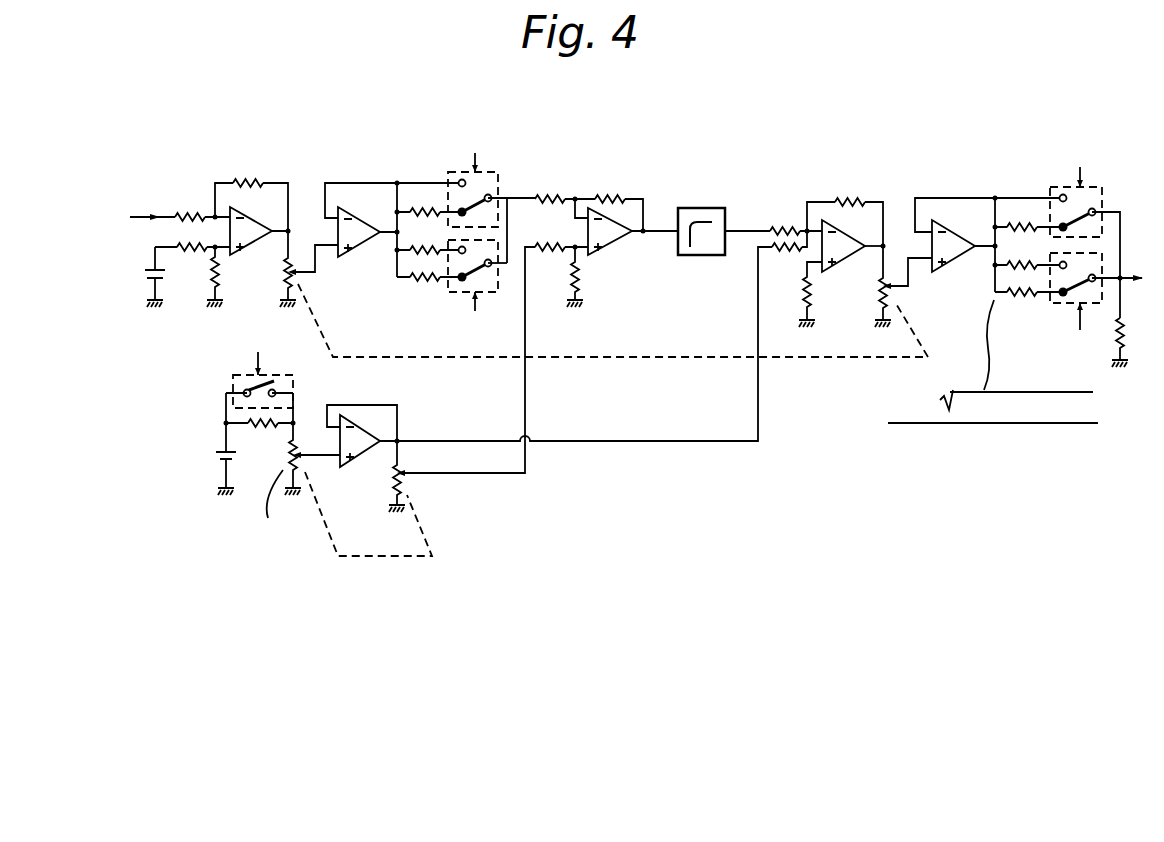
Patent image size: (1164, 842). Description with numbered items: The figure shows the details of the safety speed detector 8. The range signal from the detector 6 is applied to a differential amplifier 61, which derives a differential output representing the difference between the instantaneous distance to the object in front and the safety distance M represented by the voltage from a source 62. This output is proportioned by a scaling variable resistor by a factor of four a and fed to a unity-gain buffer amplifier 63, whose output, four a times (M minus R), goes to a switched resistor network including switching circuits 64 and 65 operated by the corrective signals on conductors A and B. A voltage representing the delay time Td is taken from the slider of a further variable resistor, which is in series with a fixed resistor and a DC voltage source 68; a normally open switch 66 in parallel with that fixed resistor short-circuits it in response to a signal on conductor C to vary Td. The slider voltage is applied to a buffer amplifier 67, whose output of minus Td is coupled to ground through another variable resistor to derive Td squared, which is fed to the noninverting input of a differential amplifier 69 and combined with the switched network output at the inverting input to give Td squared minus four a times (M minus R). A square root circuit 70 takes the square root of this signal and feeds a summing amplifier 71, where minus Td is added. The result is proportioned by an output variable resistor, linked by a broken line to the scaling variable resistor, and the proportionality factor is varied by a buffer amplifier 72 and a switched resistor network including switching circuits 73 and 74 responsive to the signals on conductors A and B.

The safety speed detector 8 is at (581, 95).
The detector 6 is at (171, 183).
The differential amplifier 61 is at (245, 253).
The source 62 is at (150, 284).
The unity-gain buffer amplifier 63 is at (351, 250).
The switching circuit 64 is at (498, 178).
The switching circuit 65 is at (491, 294).
The normally open switch 66 is at (293, 378).
The buffer amplifier 67 is at (351, 463).
The DC voltage source 68 is at (214, 456).
The differential amplifier 69 is at (609, 250).
The square root circuit 70 is at (702, 257).
The summing amplifier 71 is at (838, 259).
The buffer amplifier 72 is at (942, 266).
The switching circuit 73 is at (1056, 185).
The switching circuit 74 is at (1050, 305).